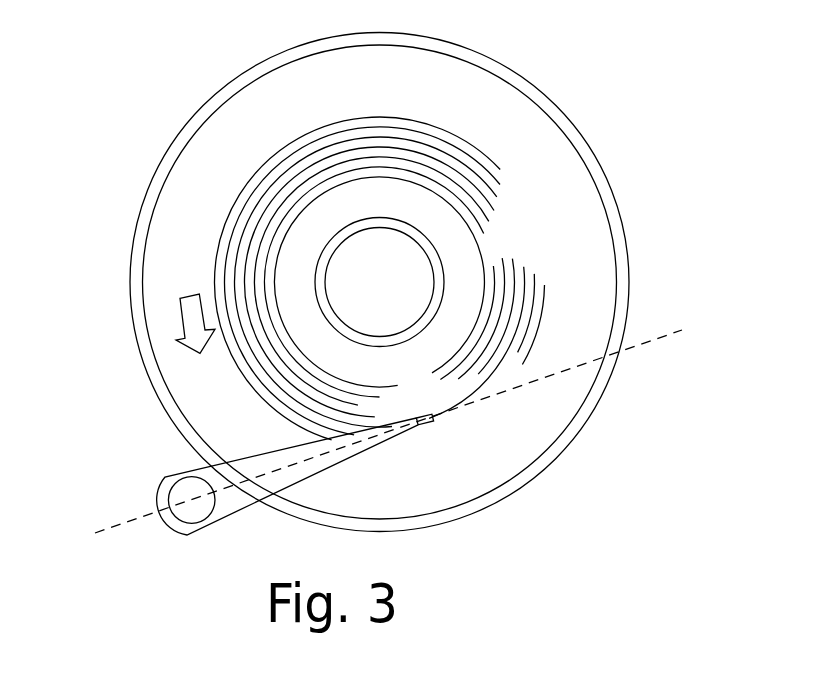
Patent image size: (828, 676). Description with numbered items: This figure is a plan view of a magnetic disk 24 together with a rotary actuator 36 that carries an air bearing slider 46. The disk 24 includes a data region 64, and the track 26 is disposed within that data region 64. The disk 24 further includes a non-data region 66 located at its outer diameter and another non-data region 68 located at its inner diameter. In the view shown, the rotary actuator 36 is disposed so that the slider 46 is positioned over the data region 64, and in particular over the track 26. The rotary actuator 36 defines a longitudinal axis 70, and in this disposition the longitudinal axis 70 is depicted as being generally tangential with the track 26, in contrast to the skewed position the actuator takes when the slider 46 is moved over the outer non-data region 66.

The disk 24 is at (150, 184).
The track 26 is at (522, 240).
The rotary actuator 36 is at (237, 502).
The air bearing slider 46 is at (425, 427).
The data region 64 is at (365, 282).
The non-data region 66 is at (170, 157).
The non-data region 68 is at (342, 228).
The longitudinal axis 70 is at (650, 342).